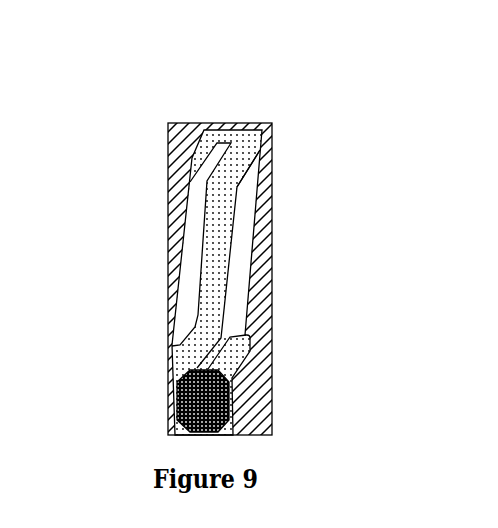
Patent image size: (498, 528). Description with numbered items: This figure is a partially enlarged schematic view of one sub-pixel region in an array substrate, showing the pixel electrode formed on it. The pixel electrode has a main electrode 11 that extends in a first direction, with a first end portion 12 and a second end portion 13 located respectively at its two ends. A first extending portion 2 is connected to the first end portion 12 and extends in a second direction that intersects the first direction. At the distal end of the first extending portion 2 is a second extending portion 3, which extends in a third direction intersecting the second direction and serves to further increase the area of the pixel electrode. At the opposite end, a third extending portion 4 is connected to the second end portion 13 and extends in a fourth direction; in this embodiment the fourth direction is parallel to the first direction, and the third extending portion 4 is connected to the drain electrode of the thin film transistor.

The first extending portion 2 is at (225, 141).
The second extending portion 3 is at (200, 160).
The third extending portion 4 is at (237, 353).
The main electrode 11 is at (217, 250).
The first end portion 12 is at (243, 170).
The second end portion 13 is at (183, 358).